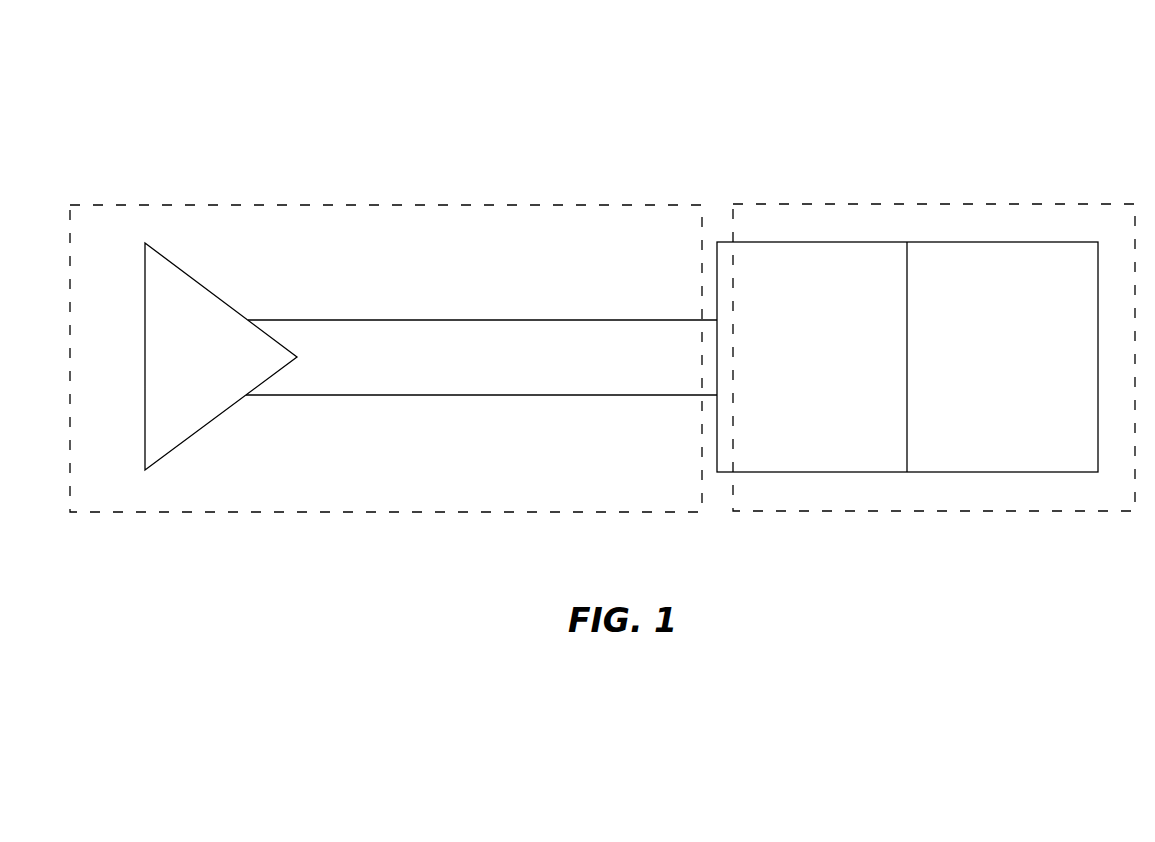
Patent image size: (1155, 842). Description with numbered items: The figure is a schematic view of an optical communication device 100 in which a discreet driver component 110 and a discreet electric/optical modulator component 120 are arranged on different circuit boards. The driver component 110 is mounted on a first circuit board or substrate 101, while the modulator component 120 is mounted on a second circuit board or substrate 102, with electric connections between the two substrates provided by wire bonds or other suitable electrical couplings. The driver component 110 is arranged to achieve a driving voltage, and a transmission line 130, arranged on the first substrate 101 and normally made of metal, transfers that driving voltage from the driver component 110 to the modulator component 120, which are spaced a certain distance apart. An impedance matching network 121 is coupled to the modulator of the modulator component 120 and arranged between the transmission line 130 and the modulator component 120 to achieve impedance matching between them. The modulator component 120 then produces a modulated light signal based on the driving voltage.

The optical communication device 100 is at (127, 95).
The first circuit board or substrate 101 is at (661, 205).
The second circuit board or substrate 102 is at (933, 205).
The driver component 110 is at (223, 300).
The modulator component 120 is at (1003, 472).
The impedance matching network 121 is at (815, 472).
The transmission line 130 is at (483, 395).